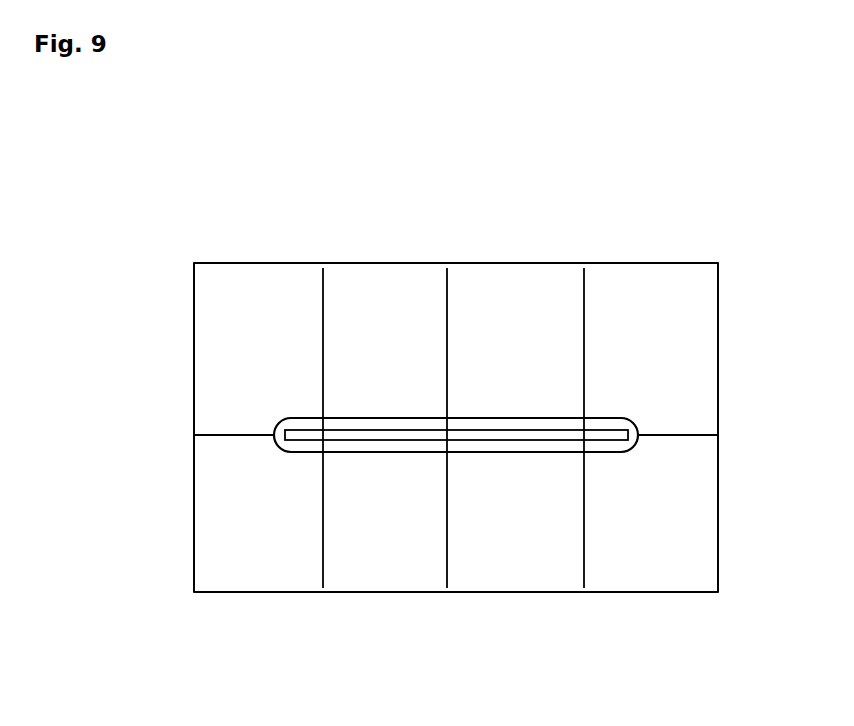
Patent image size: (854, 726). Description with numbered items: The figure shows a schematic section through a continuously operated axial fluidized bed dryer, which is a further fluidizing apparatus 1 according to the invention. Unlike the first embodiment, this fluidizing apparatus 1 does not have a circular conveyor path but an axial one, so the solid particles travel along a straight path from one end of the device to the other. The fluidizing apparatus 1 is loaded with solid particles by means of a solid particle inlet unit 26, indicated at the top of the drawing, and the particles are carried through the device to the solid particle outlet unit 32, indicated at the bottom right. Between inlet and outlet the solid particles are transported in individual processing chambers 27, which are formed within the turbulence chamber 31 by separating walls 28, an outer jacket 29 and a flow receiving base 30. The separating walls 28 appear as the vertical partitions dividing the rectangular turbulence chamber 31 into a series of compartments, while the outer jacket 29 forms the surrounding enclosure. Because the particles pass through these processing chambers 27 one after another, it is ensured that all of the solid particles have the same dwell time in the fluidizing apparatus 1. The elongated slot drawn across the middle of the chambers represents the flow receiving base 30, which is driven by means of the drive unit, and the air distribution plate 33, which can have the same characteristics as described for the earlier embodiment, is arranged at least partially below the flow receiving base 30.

The fluidizing apparatus 1 is at (105, 115).
The solid particle inlet unit 26 is at (241, 252).
The processing chambers 27 is at (252, 345).
The separating walls 28 is at (447, 312).
The outer jacket 29 is at (300, 592).
The flow receiving base 30 is at (636, 408).
The turbulence chamber 31 is at (346, 250).
The solid particle outlet unit 32 is at (698, 592).
The air distribution plate 33 is at (390, 440).